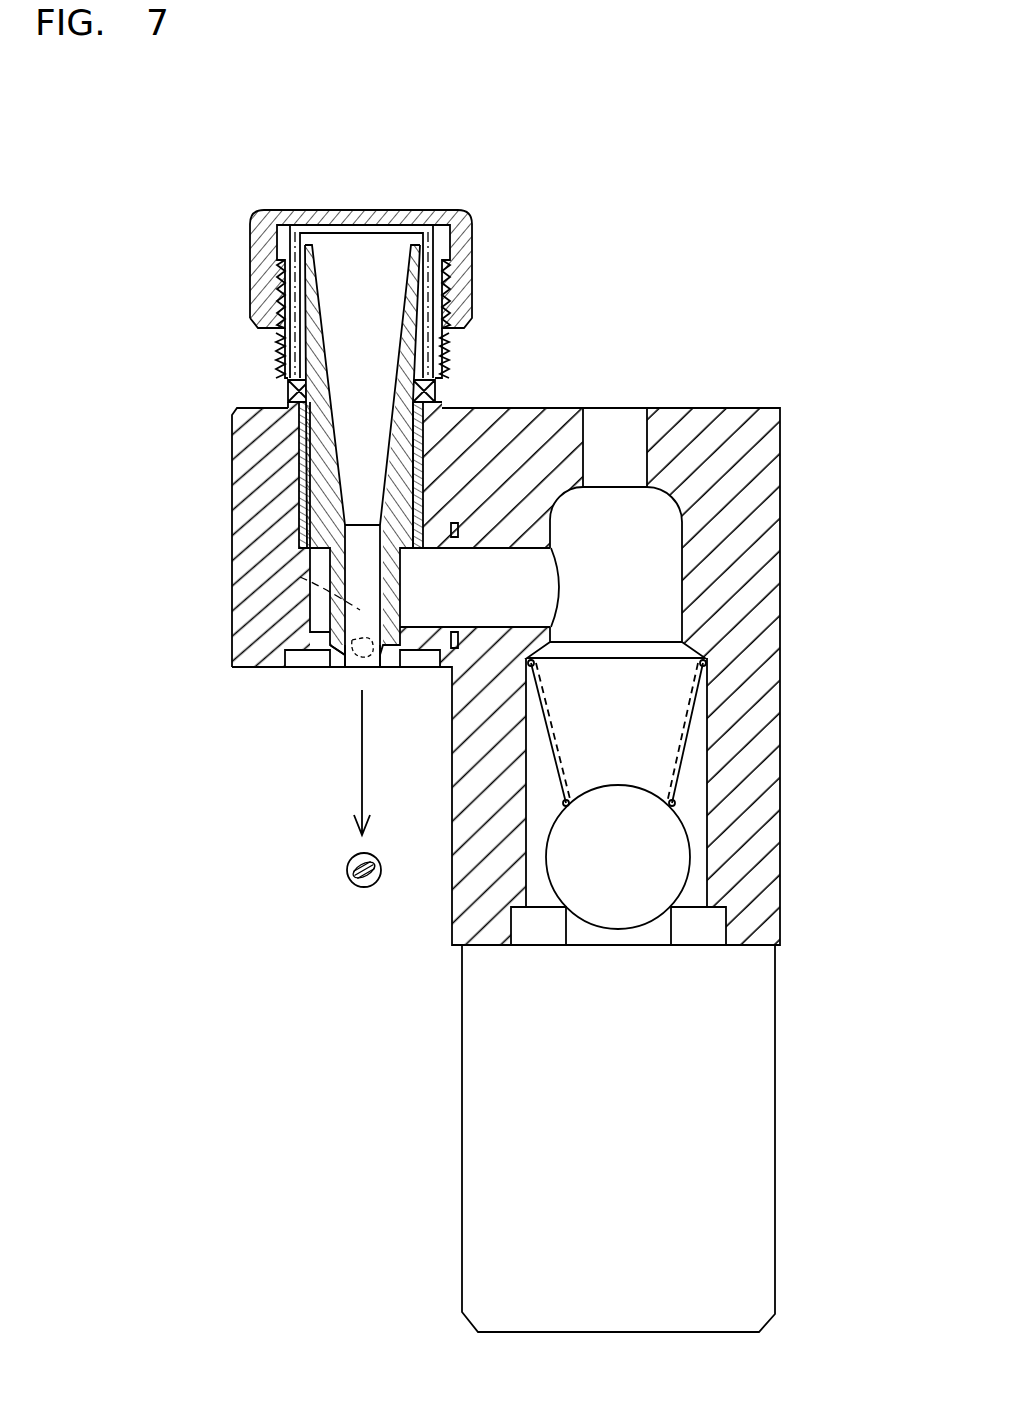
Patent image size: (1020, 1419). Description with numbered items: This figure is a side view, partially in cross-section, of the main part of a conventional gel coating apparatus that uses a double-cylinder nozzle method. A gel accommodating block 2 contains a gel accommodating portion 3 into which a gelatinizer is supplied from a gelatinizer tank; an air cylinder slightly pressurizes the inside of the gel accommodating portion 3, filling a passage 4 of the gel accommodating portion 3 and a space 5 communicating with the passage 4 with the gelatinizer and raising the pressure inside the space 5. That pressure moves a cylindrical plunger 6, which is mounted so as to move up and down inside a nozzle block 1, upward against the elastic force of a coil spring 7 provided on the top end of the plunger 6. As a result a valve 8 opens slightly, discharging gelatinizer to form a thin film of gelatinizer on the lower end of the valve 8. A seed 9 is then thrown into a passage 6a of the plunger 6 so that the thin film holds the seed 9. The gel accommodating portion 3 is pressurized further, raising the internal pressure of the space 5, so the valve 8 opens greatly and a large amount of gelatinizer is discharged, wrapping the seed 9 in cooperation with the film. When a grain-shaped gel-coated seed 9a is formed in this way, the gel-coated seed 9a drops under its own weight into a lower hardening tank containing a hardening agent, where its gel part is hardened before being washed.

The nozzle block 1 is at (354, 257).
The gel accommodating block 2 is at (848, 360).
The gel accommodating portion 3 is at (672, 548).
The passage 4 is at (493, 568).
The space 5 is at (320, 617).
The cylindrical plunger 6 is at (317, 455).
The passage of plunger 6a is at (372, 668).
The coil spring 7 is at (272, 246).
The valve 8 is at (357, 668).
The seed 9 is at (307, 577).
The gel-coated seed 9a is at (347, 866).